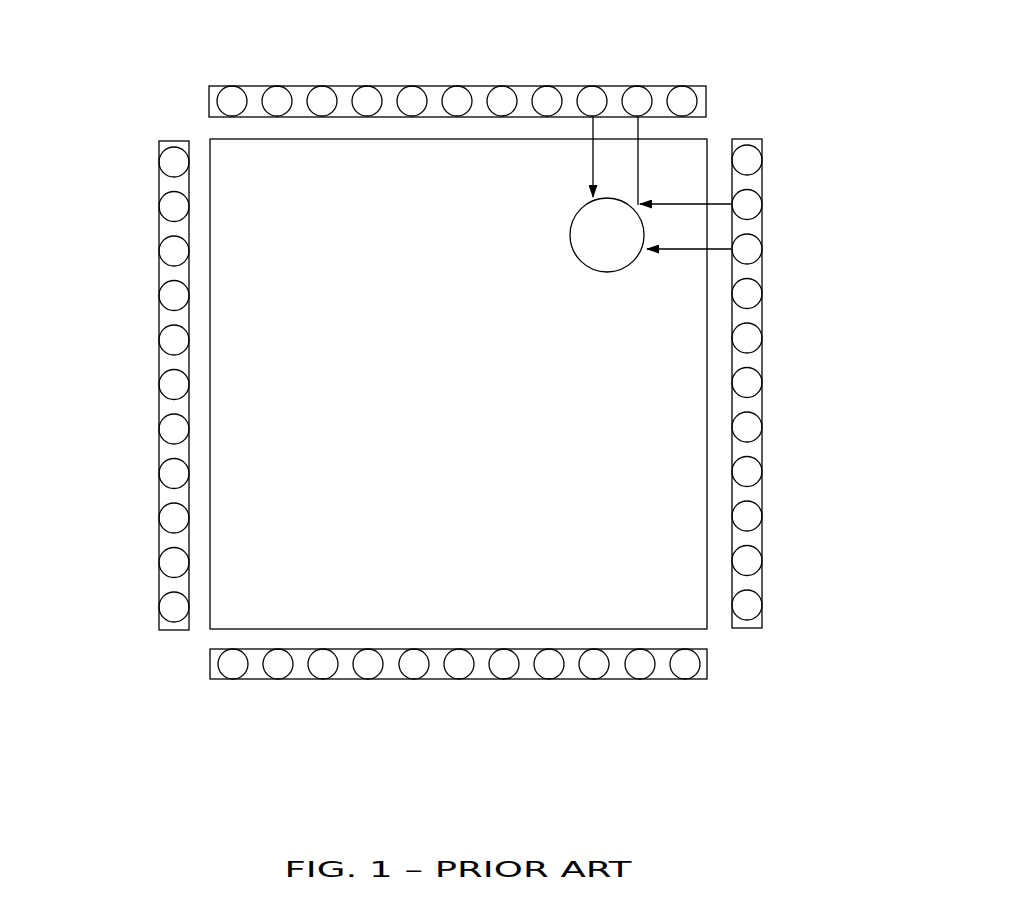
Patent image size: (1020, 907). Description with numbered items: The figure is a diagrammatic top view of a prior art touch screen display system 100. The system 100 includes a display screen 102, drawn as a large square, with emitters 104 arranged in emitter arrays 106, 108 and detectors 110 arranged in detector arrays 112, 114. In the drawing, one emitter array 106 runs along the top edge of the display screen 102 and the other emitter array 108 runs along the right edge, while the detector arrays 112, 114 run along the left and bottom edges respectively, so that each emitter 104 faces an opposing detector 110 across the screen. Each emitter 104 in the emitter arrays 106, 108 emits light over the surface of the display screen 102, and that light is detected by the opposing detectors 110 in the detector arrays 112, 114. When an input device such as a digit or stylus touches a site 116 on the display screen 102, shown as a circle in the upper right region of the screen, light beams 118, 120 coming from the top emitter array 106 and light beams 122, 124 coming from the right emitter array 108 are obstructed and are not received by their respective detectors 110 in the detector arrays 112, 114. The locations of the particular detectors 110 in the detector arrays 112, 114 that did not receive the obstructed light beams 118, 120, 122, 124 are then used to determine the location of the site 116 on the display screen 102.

The touch screen display system 100 is at (733, 749).
The display screen 102 is at (493, 400).
The emitters 104 is at (323, 102).
The emitter array 106 is at (212, 85).
The emitter array 108 is at (768, 610).
The detectors 110 is at (177, 254).
The detector array 112 is at (158, 622).
The detector array 114 is at (218, 682).
The site 116 is at (625, 247).
The light beam 118 is at (592, 147).
The light beam 120 is at (637, 146).
The light beam 122 is at (703, 205).
The light beam 124 is at (693, 249).